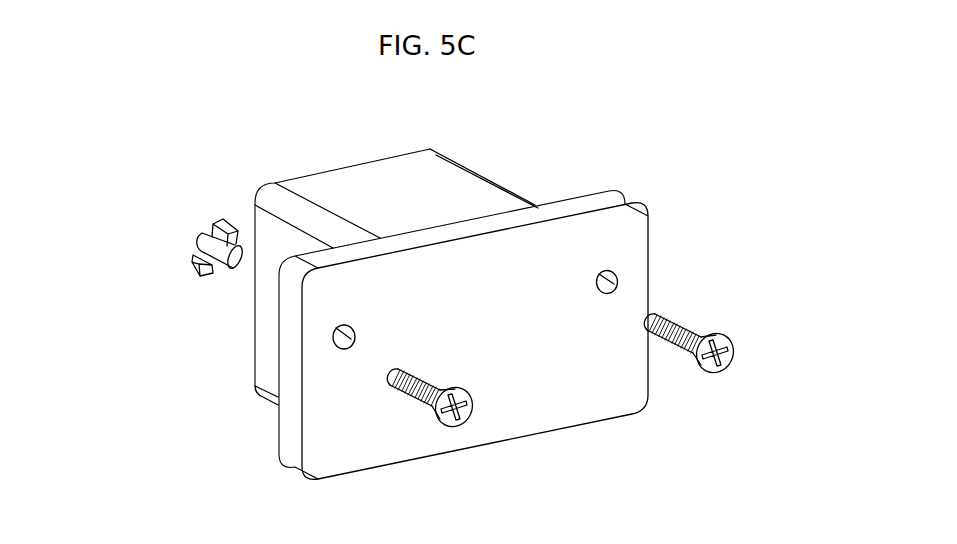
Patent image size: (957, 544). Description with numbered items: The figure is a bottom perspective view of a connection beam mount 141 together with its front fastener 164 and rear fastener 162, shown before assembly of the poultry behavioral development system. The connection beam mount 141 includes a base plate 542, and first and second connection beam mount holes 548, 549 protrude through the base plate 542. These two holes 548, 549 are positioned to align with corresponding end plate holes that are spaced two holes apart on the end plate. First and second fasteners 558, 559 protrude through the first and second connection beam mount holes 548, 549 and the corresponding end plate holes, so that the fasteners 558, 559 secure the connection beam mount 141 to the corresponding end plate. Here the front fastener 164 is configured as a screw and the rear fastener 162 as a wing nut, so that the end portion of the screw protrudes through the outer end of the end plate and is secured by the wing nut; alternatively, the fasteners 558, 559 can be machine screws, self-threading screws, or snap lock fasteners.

The housing body 141 is at (253, 170).
The rear fastener 162 is at (188, 233).
The front fastener 164 is at (747, 383).
The base plate 542 is at (603, 189).
The first connection beam mount hole 548 is at (611, 272).
The second connection beam mount hole 549 is at (357, 327).
The first fastener 558 is at (747, 375).
The second fastener 559 is at (478, 436).